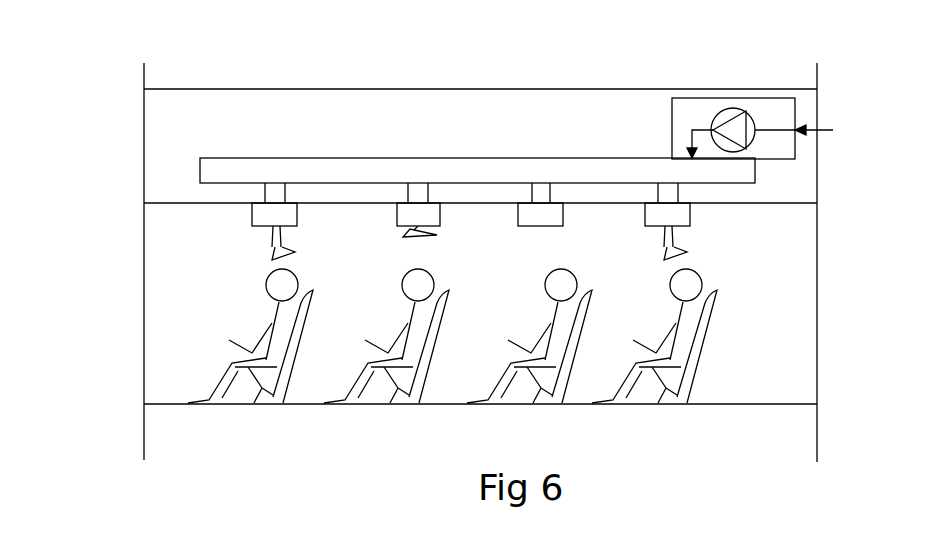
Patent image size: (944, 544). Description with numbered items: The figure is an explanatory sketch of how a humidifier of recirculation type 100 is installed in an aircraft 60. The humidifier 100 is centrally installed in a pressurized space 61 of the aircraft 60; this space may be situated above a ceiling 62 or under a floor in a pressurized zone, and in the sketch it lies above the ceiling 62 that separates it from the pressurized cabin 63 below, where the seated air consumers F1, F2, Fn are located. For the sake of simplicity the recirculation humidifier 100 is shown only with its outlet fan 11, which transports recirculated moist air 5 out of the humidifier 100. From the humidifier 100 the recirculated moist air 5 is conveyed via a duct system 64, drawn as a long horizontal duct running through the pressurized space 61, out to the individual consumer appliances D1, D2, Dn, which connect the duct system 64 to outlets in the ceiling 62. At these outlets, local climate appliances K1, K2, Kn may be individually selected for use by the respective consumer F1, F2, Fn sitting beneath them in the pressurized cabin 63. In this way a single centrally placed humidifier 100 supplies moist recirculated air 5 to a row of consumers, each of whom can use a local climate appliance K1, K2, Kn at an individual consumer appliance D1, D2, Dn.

The aircraft 60 is at (212, 79).
The pressurized space 61 is at (310, 115).
The ceiling 62 is at (212, 203).
The pressurized cabin 63 is at (185, 360).
The duct system 64 is at (455, 175).
The recirculated moist air 5 is at (700, 128).
The humidifier of recirculation type 100 is at (772, 108).
The outlet fan 11 is at (737, 132).
The individual consumer appliance D1 is at (276, 217).
The individual consumer appliance D2 is at (413, 217).
The individual consumer appliance Dn is at (670, 215).
The local climate appliance K1 is at (270, 243).
The local climate appliance K2 is at (407, 232).
The local climate appliance Kn is at (667, 238).
The air consumer F1 is at (273, 314).
The air consumer F2 is at (406, 318).
The air consumer Fn is at (678, 318).